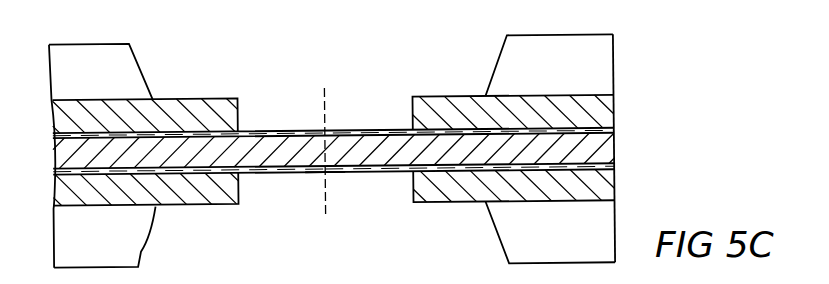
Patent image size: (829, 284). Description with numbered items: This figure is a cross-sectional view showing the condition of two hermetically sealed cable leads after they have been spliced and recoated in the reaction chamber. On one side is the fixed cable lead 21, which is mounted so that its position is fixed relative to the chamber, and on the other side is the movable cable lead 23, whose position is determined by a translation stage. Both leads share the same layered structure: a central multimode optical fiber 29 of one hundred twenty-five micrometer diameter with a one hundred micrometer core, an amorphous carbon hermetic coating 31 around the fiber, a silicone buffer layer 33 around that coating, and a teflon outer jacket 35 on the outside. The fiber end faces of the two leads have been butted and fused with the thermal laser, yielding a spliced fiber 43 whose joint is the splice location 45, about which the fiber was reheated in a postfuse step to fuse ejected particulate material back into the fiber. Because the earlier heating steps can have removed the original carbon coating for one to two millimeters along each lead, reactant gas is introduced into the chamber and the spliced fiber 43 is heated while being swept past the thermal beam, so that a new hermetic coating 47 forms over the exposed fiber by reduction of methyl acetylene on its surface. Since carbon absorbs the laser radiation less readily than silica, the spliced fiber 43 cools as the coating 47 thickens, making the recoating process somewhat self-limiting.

The fixed cable lead 21 is at (409, 66).
The movable cable lead 23 is at (229, 71).
The multimode optical fiber 29 is at (272, 147).
The amorphous carbon hermetic coating 31 is at (395, 133).
The silicone buffer layer 33 is at (459, 105).
The teflon outer jacket 35 is at (103, 78).
The spliced fiber 43 is at (305, 148).
The splice location 45 is at (337, 184).
The hermetic coating 47 is at (308, 177).